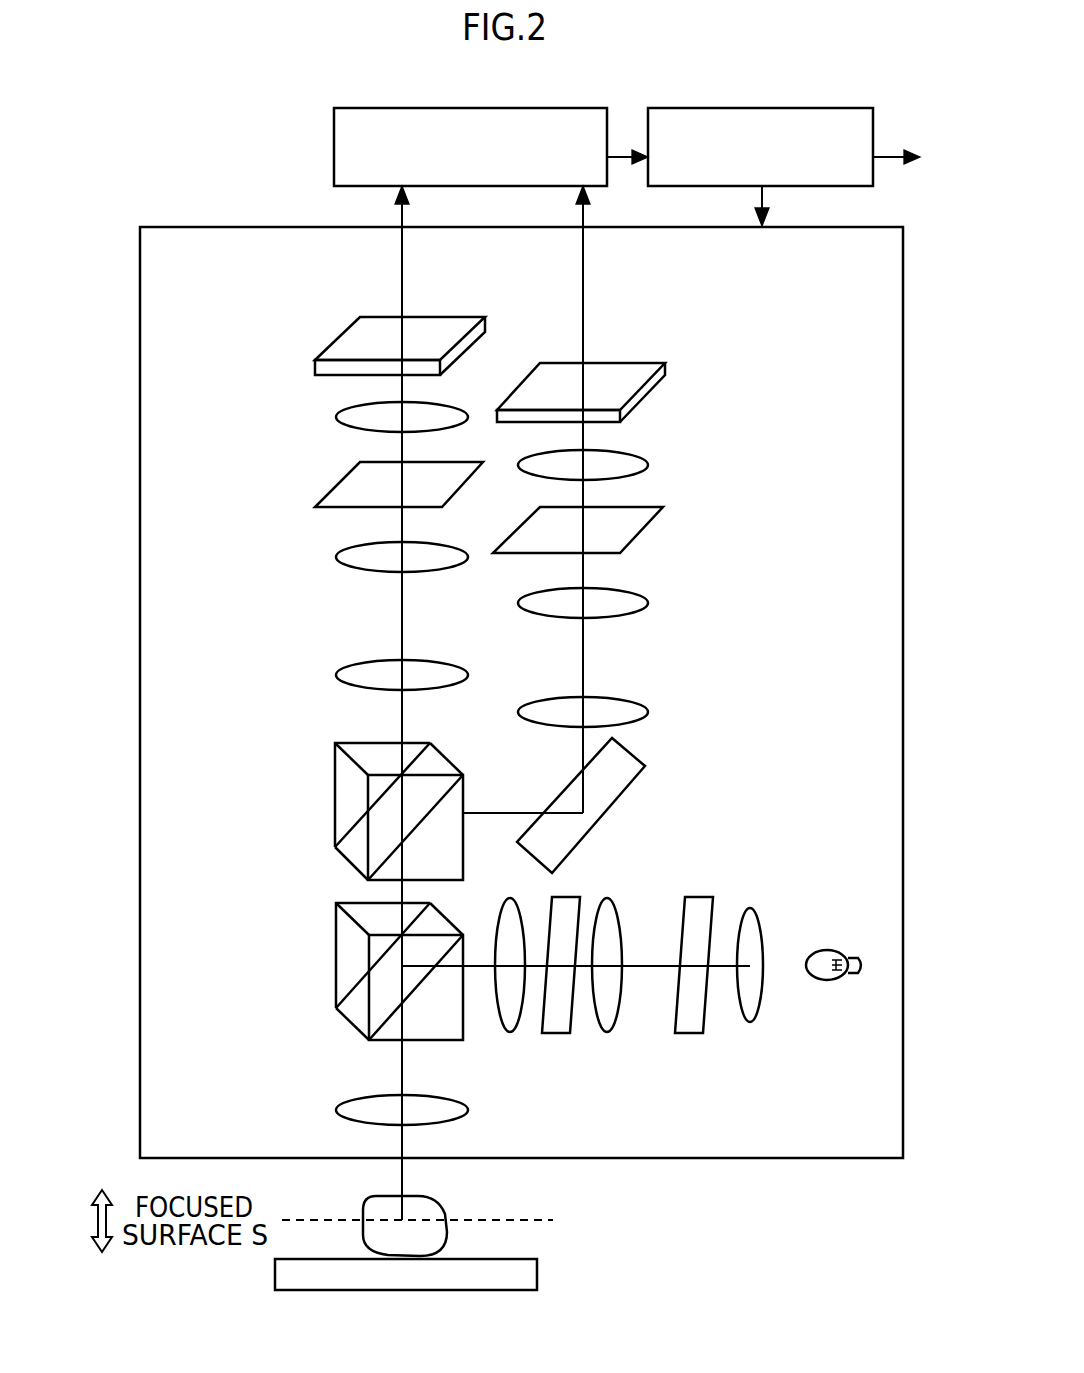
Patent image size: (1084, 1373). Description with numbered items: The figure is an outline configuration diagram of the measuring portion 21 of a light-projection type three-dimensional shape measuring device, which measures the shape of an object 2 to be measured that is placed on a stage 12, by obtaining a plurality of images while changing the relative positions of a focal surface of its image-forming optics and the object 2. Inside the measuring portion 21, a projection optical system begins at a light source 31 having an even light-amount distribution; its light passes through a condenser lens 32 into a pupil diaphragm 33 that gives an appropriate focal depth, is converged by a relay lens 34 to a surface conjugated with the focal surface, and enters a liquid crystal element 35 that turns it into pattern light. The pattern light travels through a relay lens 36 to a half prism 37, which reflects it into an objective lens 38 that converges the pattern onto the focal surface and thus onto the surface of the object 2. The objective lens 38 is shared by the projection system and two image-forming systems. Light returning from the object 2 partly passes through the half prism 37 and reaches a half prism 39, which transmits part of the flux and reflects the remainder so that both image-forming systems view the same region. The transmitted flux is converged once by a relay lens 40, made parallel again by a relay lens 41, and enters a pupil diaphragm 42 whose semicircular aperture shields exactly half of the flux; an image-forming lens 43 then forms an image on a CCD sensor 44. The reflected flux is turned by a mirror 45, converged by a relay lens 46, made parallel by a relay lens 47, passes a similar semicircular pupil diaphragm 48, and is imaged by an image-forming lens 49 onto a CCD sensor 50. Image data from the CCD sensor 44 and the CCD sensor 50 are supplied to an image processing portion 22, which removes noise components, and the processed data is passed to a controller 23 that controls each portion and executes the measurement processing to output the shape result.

The object to be measured 2 is at (443, 1212).
The stage 12 is at (538, 1270).
The measuring portion 21 is at (226, 226).
The image processing portion 22 is at (547, 106).
The controller 23 is at (815, 106).
The light source 31 is at (826, 948).
The condenser lens 32 is at (750, 1022).
The pupil diaphragm 33 is at (690, 1035).
The relay lens 34 is at (607, 1035).
The liquid crystal element 35 is at (556, 1035).
The relay lens 36 is at (510, 1032).
The half prism 37 is at (336, 925).
The objective lens 38 is at (338, 1110).
The half prism 39 is at (335, 765).
The relay lens 40 is at (337, 675).
The relay lens 41 is at (337, 557).
The pupil diaphragm 42 is at (333, 488).
The image-forming lens 43 is at (338, 417).
The CCD sensor 44 is at (332, 346).
The mirror 45 is at (645, 766).
The relay lens 46 is at (645, 705).
The relay lens 47 is at (646, 597).
The pupil diaphragm 48 is at (658, 505).
The image-forming lens 49 is at (646, 458).
The CCD sensor 50 is at (665, 367).